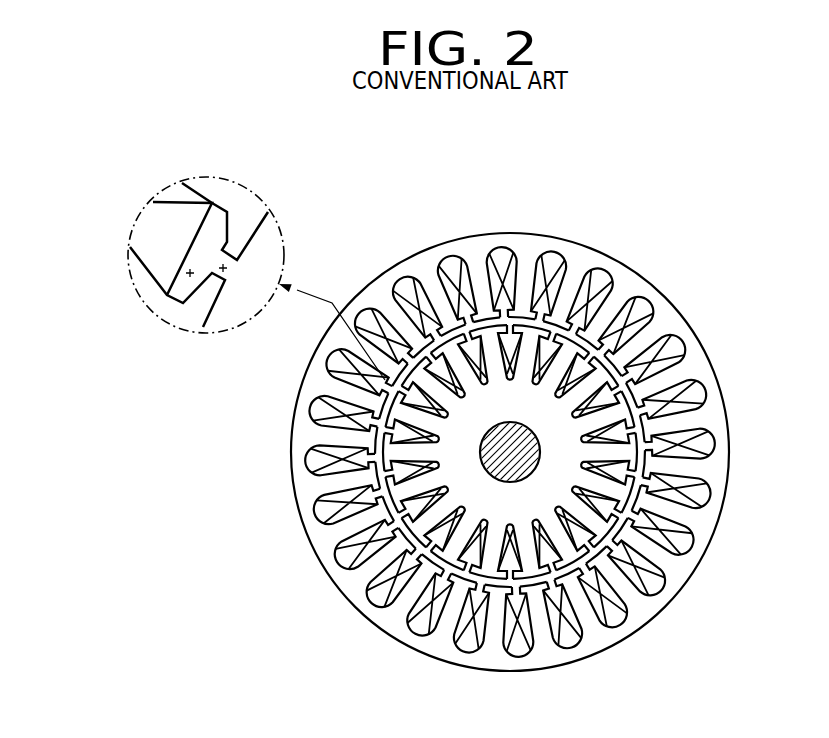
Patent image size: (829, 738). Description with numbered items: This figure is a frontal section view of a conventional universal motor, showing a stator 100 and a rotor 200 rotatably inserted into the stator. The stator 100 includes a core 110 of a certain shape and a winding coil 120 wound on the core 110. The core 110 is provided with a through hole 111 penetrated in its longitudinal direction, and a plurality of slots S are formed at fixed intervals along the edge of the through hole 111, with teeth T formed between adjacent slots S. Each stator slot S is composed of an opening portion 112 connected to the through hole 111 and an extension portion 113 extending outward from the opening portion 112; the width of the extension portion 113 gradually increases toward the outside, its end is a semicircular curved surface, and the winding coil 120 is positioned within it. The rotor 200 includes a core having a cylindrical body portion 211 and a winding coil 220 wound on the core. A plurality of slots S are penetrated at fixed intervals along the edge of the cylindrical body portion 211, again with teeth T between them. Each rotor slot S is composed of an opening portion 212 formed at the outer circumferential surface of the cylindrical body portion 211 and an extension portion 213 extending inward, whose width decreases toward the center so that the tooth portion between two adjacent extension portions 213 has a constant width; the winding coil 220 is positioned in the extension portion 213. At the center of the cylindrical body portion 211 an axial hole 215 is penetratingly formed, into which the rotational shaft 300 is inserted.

The stator 100 is at (700, 313).
The core 110 is at (712, 528).
The through hole 111 is at (382, 398).
The opening portion 112 is at (190, 273).
The extension portion 113 is at (223, 268).
The winding coil 120 is at (645, 298).
The rotor 200 is at (638, 392).
The cylindrical body portion 211 is at (552, 493).
The opening portion 212 is at (570, 500).
The extension portion 213 is at (575, 555).
The axial hole 215 is at (539, 460).
The winding coil 220 is at (624, 431).
The rotational shaft 300 is at (517, 420).
The teeth T is at (325, 462).
The slots S is at (704, 684).